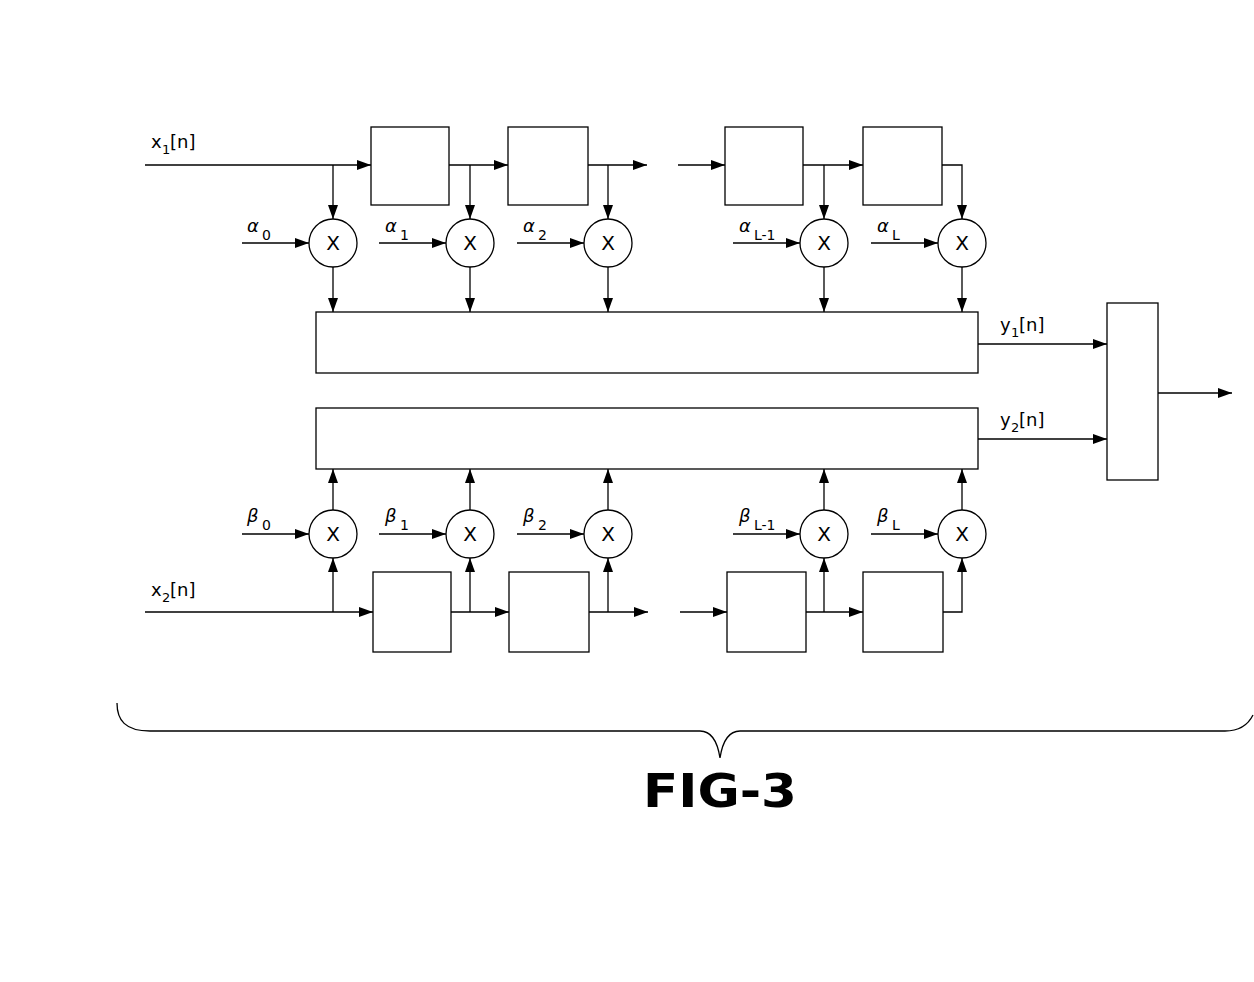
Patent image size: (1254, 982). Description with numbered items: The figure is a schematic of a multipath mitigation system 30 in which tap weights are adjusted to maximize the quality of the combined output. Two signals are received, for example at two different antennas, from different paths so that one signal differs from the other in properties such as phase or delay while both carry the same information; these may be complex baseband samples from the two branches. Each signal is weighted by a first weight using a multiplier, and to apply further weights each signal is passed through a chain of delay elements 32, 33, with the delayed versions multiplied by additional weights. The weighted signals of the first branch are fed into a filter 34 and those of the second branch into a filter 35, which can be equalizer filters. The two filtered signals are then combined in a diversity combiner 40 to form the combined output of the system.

The multipath mitigation system 30 is at (940, 76).
The delay elements 32 is at (642, 142).
The delay elements 33 is at (644, 638).
The filter 34 is at (316, 344).
The filter 35 is at (316, 438).
The diversity combiner 40 is at (1130, 303).